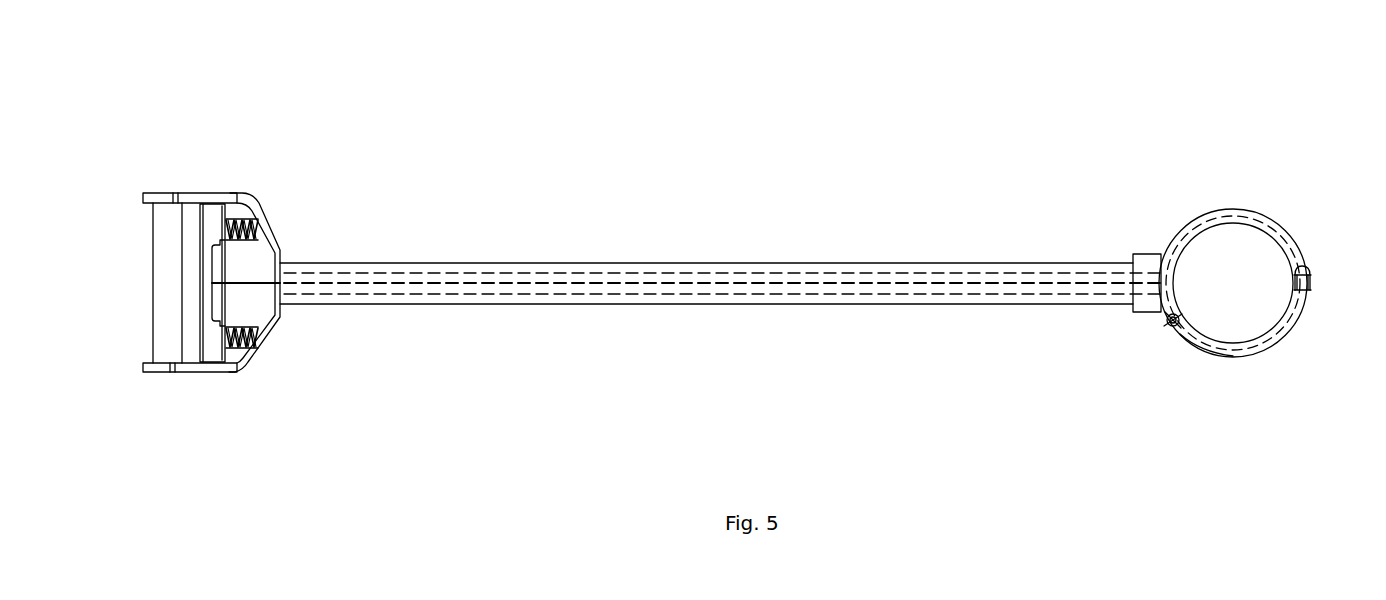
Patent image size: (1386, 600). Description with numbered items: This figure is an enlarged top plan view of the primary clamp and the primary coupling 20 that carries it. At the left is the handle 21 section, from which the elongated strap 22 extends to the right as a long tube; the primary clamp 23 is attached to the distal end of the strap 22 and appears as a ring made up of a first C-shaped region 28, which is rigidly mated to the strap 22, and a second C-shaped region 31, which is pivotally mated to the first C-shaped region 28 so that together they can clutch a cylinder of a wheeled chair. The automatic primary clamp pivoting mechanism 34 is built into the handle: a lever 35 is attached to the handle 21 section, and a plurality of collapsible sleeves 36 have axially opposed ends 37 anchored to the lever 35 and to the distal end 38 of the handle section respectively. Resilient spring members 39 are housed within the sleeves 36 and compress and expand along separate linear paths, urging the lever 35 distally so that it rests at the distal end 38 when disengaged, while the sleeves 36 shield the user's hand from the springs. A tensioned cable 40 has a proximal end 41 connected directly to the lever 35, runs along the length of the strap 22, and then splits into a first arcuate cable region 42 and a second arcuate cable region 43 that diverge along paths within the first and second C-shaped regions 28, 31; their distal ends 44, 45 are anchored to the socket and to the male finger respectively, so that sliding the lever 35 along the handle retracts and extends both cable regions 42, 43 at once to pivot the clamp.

The primary coupling 20 is at (512, 186).
The handle section 21 is at (177, 203).
The elongated strap 22 is at (388, 263).
The primary clamp 23 is at (1213, 209).
The first C-shaped region 28 is at (1245, 214).
The second C-shaped region 31 is at (1228, 357).
The automatic primary clamp pivoting mechanism 34 is at (293, 337).
The lever 35 is at (190, 348).
The collapsible sleeves 36 is at (226, 334).
The axially opposed ends 37 is at (232, 218).
The distal end of the handle section 38 is at (162, 273).
The resilient spring members 39 is at (240, 337).
The tensioned cable 40 is at (548, 283).
The proximal end of the tensioned cable 41 is at (242, 283).
The first arcuate cable region 42 is at (1265, 223).
The second arcuate cable region 43 is at (1257, 344).
The distal end of the first arcuate cable region 44 is at (1297, 268).
The distal end of the second arcuate cable region 45 is at (1299, 292).